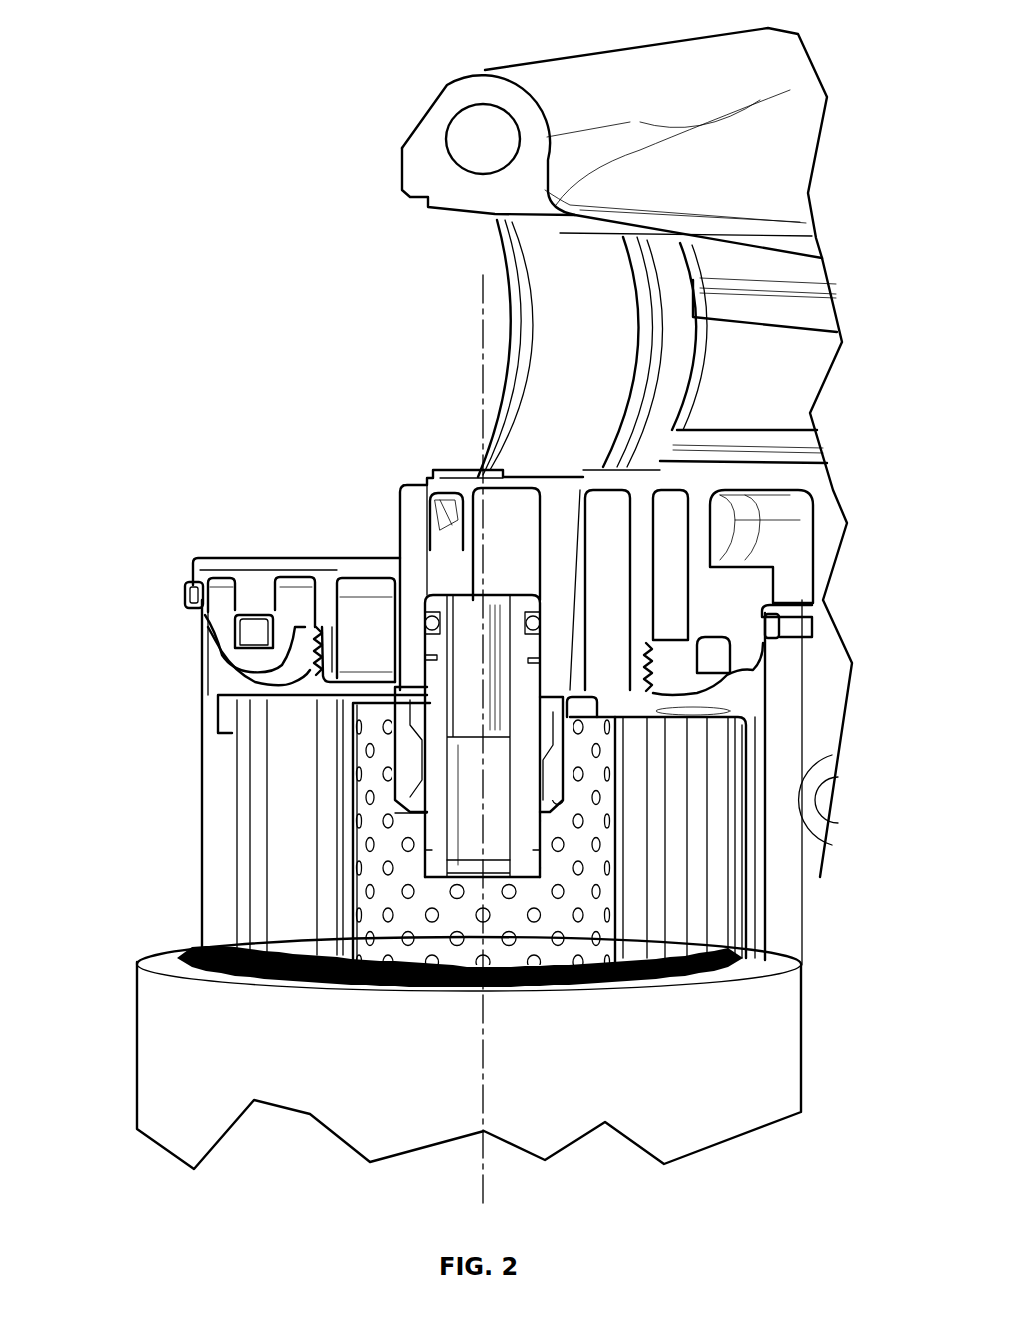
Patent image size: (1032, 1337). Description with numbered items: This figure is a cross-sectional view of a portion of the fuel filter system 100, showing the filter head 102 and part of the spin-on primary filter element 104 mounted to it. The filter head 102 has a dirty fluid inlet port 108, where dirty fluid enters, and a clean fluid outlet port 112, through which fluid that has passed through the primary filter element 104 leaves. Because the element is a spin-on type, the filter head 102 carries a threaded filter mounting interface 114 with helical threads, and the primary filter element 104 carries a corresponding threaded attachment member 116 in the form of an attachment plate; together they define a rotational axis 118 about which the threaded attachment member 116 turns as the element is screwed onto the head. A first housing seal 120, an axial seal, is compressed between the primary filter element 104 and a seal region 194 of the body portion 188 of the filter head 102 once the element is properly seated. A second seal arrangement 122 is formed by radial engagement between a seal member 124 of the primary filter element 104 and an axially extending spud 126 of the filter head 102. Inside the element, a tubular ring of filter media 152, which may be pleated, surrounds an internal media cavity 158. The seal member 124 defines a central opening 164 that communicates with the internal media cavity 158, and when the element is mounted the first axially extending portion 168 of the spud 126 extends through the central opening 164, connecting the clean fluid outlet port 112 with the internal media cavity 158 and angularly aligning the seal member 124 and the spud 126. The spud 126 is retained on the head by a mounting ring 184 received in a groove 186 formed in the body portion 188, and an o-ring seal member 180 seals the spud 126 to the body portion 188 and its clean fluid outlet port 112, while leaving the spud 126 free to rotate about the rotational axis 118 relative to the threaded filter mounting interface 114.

The filter system 100 is at (268, 178).
The filter head 102 is at (420, 142).
The primary filter element 104 is at (163, 630).
The dirty fluid inlet port 108 is at (608, 528).
The clean fluid outlet port 112 is at (500, 528).
The threaded filter mounting interface 114 is at (323, 612).
The threaded attachment member 116 is at (257, 593).
The rotational axis 118 is at (480, 292).
The first housing seal 120 is at (197, 598).
The second seal arrangement 122 is at (587, 748).
The seal member 124 is at (548, 790).
The axially extending spud 126 is at (523, 690).
The tubular ring of filter media 152 is at (248, 806).
The internal media cavity 158 is at (380, 905).
The central opening 164 is at (532, 848).
The first axially extending portion 168 is at (410, 858).
The seal member (o-ring) 180 is at (537, 627).
The mounting ring 184 is at (406, 666).
The groove 186 is at (218, 696).
The body portion 188 is at (418, 505).
The seal region 194 is at (250, 580).